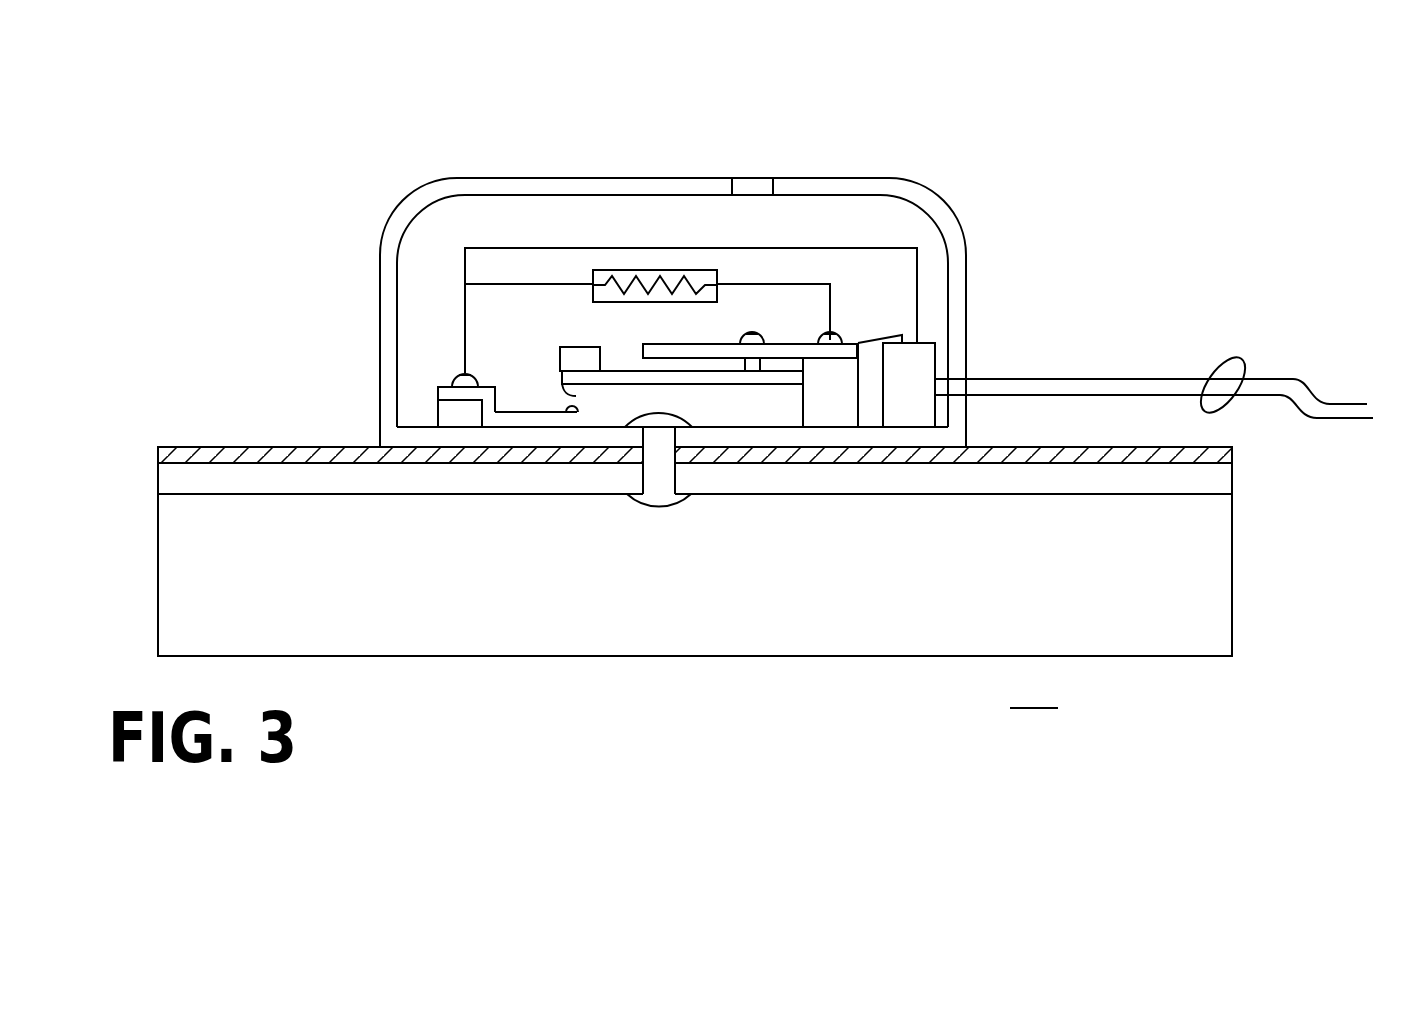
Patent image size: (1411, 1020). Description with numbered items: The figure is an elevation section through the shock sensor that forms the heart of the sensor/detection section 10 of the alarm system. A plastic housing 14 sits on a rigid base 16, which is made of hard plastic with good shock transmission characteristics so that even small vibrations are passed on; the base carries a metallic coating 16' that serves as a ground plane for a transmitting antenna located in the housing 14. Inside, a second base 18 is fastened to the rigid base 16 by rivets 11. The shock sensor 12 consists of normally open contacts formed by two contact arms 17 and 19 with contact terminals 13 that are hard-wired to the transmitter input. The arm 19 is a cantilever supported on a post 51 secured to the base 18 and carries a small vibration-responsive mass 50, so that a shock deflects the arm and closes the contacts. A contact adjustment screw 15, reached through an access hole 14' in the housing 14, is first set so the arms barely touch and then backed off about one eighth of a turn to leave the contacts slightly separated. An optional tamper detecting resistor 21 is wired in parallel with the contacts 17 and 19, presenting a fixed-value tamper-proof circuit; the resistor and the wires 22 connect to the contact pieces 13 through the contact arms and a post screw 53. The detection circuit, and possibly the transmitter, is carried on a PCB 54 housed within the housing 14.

The sensor/detection section 10 is at (1034, 689).
The rivets 11 is at (672, 505).
The shock sensor 12 is at (548, 397).
The contact terminals 13 is at (562, 386).
The housing 14 is at (712, 291).
The access hole 14' is at (800, 157).
The contact adjustment screw 15 is at (755, 343).
The rigid base 16 is at (780, 551).
The metallic coating 16' is at (781, 457).
The contact arm 17 is at (510, 413).
The base 18 is at (425, 437).
The contact arm 19 is at (770, 387).
The tamper detecting resistor 21 is at (600, 270).
The wires 22 is at (1240, 362).
The vibration-responsive mass 50 is at (582, 347).
The post 51 is at (828, 415).
The post screw 53 is at (838, 343).
The PCB 54 is at (925, 367).